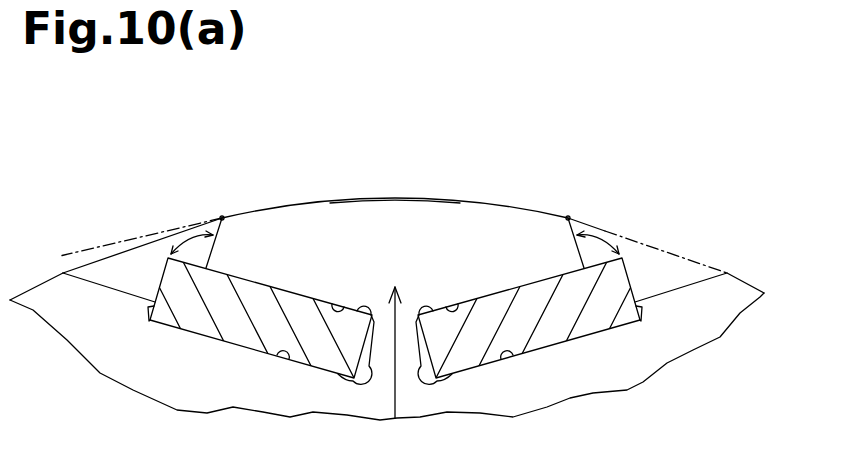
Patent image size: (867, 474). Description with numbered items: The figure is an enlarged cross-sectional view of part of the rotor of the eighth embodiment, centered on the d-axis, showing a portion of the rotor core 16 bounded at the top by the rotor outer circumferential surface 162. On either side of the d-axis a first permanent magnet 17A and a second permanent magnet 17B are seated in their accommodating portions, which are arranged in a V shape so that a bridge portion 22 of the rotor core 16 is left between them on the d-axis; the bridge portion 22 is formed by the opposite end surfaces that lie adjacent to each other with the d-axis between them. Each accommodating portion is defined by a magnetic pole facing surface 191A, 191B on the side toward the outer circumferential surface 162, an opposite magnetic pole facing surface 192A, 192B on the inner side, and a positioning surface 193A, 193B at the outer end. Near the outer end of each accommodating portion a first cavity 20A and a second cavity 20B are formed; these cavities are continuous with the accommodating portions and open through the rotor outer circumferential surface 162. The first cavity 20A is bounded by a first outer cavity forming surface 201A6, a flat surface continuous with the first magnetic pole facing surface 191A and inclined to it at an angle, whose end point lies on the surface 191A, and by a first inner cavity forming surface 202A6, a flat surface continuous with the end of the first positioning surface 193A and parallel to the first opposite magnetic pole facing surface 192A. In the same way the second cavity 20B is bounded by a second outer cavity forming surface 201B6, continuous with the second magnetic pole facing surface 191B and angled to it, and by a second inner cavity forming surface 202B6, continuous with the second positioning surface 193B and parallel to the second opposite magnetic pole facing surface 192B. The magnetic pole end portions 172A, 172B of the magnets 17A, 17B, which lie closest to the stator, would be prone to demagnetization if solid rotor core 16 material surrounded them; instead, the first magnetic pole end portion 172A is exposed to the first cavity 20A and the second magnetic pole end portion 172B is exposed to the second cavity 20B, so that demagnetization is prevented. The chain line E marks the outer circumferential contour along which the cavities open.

The rotor core 16 is at (455, 212).
The rotor outer circumferential surface 162 is at (388, 198).
The first permanent magnet 17A is at (237, 331).
The second permanent magnet 17B is at (556, 343).
The first magnetic pole end portion 172A is at (168, 257).
The second magnetic pole end portion 172B is at (617, 257).
The first magnetic pole facing surface 191A is at (334, 302).
The second magnetic pole facing surface 191B is at (456, 302).
The first opposite magnetic pole facing surface 192A is at (283, 358).
The second opposite magnetic pole facing surface 192B is at (507, 358).
The first positioning surface 193A is at (155, 314).
The second positioning surface 193B is at (633, 316).
The first cavity 20A is at (128, 262).
The second cavity 20B is at (658, 262).
The first outer cavity forming surface 201A6 is at (222, 216).
The second outer cavity forming surface 201B6 is at (568, 216).
The first inner cavity forming surface 202A6 is at (106, 284).
The second inner cavity forming surface 202B6 is at (672, 283).
The bridge portion 22 is at (383, 352).
The virtual tangent line E is at (80, 251).
The element d-axis is at (396, 400).